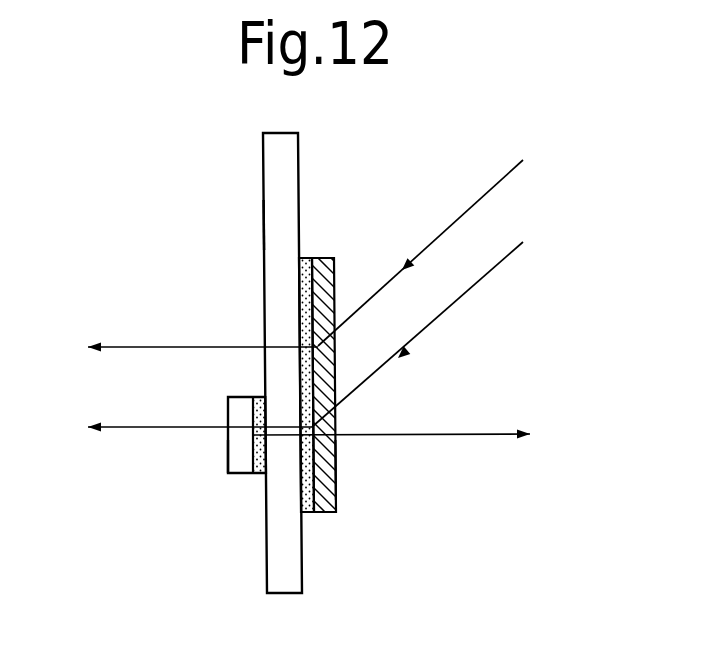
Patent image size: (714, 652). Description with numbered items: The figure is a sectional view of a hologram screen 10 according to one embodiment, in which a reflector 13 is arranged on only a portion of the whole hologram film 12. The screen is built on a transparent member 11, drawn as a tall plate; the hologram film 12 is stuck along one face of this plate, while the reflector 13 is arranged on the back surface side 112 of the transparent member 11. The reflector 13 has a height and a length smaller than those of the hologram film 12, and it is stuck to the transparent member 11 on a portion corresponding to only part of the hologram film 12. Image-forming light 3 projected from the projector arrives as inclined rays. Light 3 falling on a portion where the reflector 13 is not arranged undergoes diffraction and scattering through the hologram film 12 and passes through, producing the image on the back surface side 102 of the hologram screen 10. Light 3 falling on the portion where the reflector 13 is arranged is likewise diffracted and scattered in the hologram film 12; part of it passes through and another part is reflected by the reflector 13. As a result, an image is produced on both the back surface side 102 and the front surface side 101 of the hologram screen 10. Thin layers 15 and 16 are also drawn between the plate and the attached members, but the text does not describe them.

The hologram screen 10 is at (370, 158).
The transparent member 11 is at (273, 165).
The back surface side of the transparent member 112 is at (263, 224).
The adhesive layer 16 is at (310, 513).
The hologram film 12 is at (334, 495).
The front surface side of the hologram screen 101 is at (337, 477).
The back surface side of the hologram screen 102 is at (228, 450).
The reflector 13 is at (228, 470).
The adhesive layer 15 is at (260, 476).
The image-forming light 3 is at (487, 193).